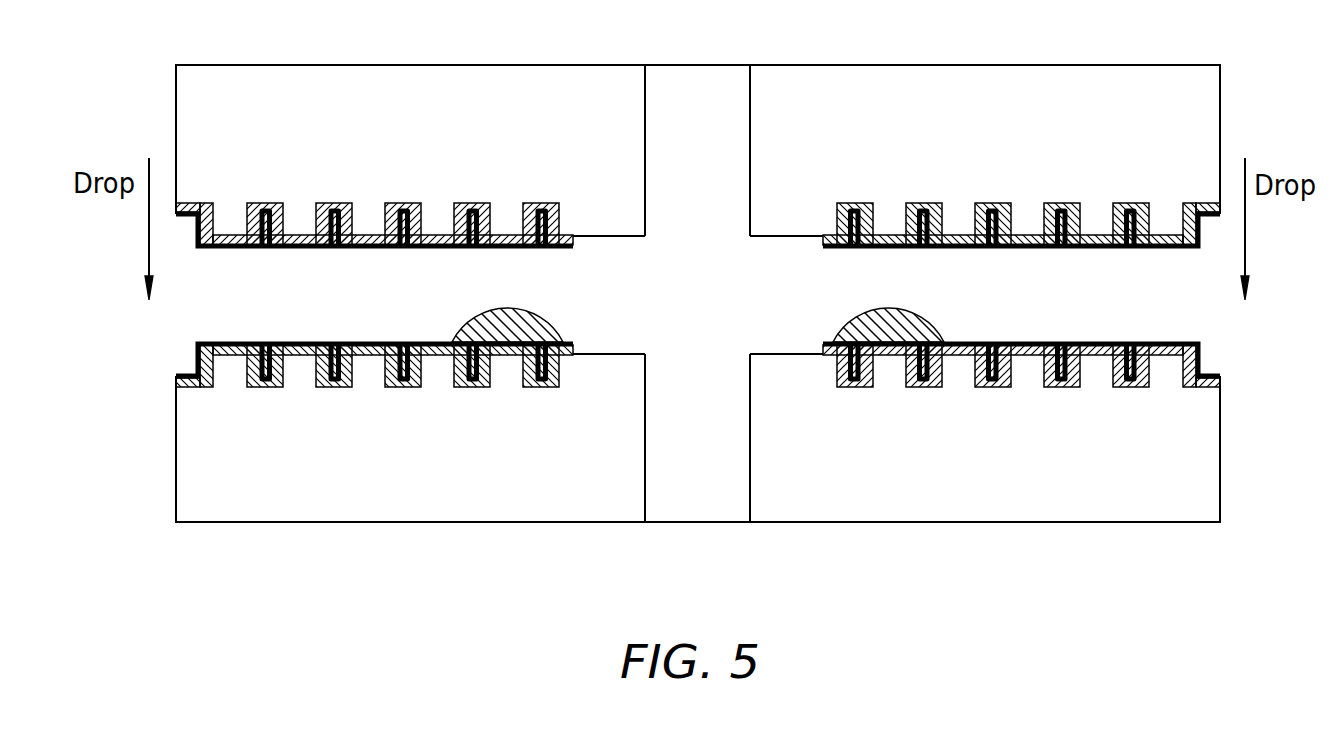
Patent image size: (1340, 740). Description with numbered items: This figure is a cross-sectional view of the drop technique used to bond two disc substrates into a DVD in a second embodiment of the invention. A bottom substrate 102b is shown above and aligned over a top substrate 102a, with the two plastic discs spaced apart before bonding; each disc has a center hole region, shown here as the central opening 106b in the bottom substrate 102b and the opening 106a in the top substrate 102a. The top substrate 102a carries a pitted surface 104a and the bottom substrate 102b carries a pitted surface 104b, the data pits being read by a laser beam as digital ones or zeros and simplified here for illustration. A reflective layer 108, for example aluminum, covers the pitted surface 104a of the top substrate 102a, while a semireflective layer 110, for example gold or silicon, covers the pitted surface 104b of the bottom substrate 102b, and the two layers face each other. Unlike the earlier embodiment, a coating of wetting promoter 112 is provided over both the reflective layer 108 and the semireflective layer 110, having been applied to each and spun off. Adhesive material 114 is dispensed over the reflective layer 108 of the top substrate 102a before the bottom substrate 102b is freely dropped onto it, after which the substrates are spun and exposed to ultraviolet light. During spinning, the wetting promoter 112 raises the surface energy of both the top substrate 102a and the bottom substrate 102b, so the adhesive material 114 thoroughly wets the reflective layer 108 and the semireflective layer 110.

The top substrate 102a is at (1205, 480).
The bottom substrate 102b is at (1205, 120).
The pitted surface 104a is at (326, 387).
The pitted surface 104b is at (265, 203).
The lower channel 106a is at (688, 376).
The upper channel 106b is at (688, 94).
The reflective layer 108 is at (465, 386).
The semireflective layer 110 is at (548, 226).
The wetting promoter 112 is at (298, 249).
The adhesive material 114 is at (547, 322).